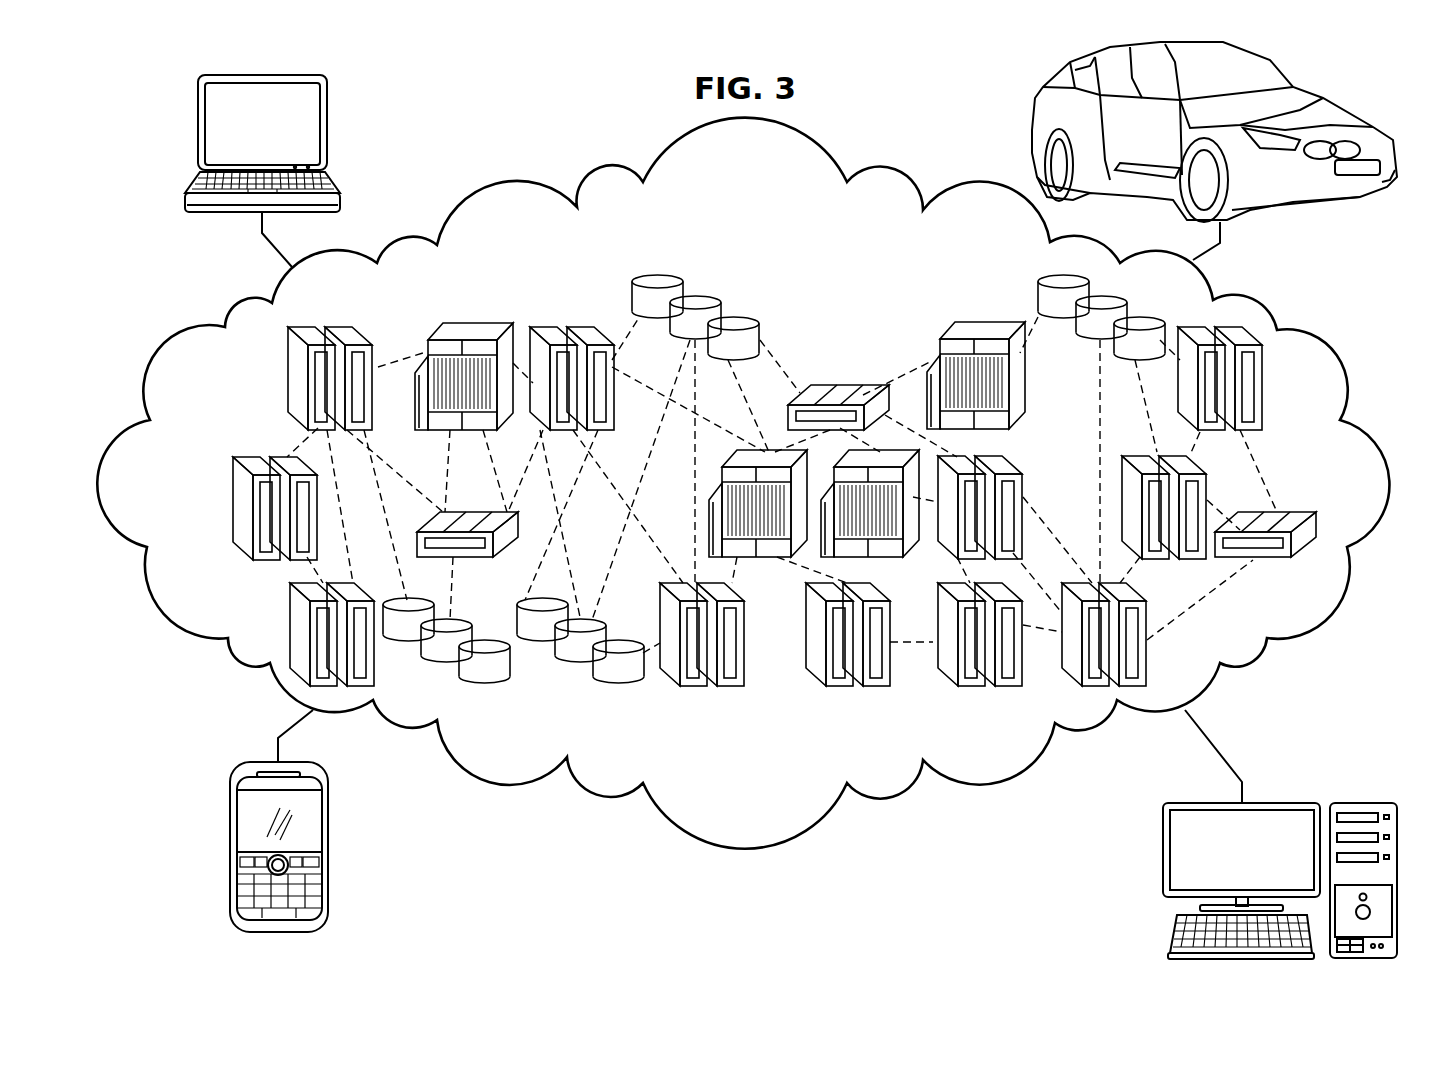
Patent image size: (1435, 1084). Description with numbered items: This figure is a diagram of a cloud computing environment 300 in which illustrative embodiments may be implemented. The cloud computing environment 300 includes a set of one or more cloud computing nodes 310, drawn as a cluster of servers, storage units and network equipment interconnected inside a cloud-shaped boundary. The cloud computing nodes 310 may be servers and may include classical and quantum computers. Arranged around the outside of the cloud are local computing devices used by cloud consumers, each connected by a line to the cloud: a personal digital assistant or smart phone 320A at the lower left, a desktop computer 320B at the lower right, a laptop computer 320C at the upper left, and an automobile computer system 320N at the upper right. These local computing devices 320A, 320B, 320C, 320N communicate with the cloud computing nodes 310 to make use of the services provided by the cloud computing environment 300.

The cloud computing environment 300 is at (916, 810).
The cloud computing nodes 310 is at (691, 840).
The smart phone 320A is at (228, 843).
The desktop computer 320B is at (1289, 796).
The laptop computer 320C is at (327, 125).
The automobile computer system 320N is at (1360, 218).